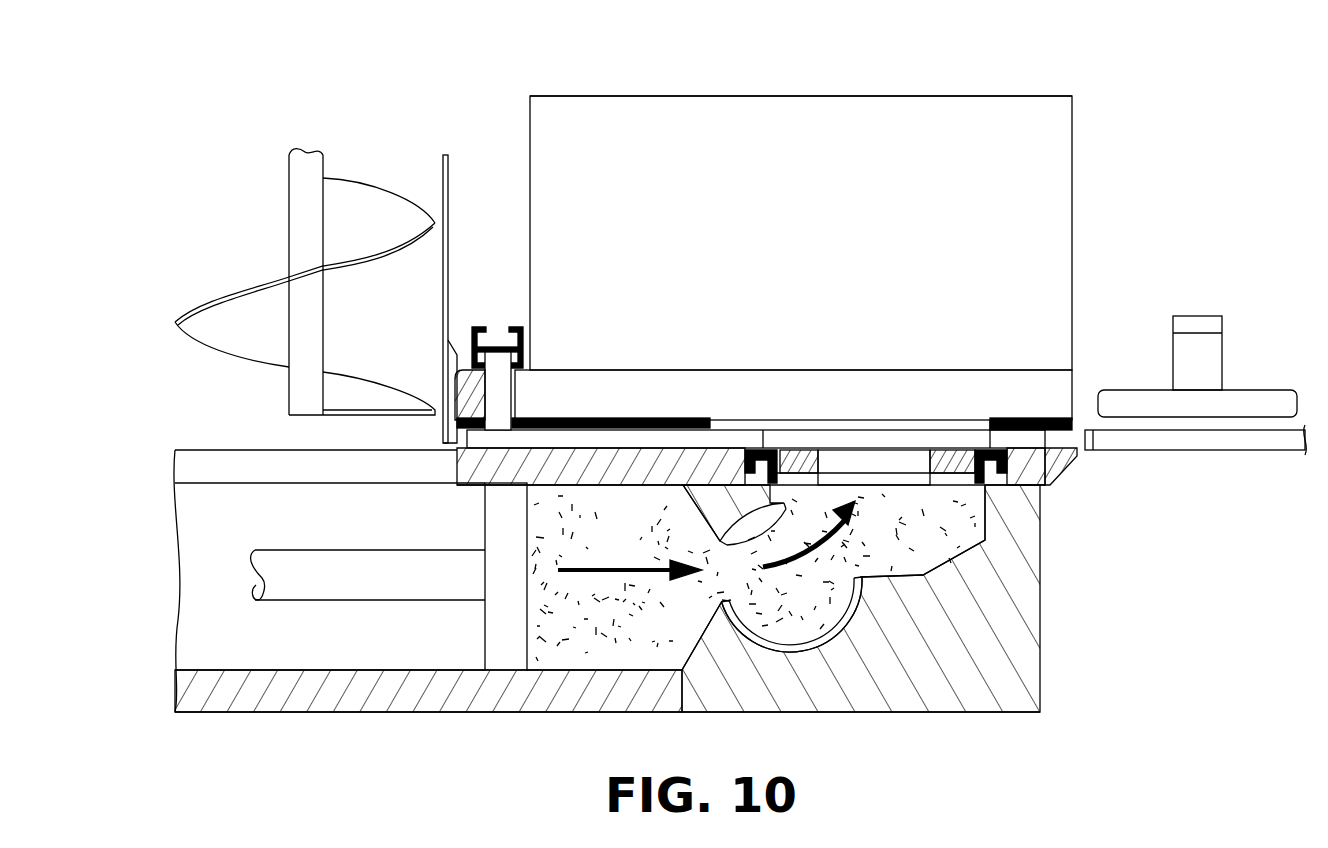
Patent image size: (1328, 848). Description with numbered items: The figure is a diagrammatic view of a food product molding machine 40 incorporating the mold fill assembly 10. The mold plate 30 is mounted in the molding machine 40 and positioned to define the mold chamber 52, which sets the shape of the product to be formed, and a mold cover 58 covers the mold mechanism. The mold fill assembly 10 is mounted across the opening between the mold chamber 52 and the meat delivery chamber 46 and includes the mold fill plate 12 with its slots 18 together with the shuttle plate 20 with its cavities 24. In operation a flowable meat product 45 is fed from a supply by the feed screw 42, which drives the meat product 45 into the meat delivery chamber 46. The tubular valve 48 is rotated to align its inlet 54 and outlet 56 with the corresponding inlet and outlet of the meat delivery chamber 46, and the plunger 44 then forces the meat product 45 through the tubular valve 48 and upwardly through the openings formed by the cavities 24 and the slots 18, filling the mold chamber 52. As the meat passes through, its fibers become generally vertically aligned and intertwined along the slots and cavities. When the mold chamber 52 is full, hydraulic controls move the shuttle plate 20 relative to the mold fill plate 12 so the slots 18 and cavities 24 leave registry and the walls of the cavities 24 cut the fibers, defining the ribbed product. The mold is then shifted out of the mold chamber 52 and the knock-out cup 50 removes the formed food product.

The mold fill assembly 10 is at (945, 507).
The mold fill plate 12 is at (965, 455).
The slots 18 is at (884, 450).
The shuttle plate 20 is at (968, 475).
The cavities 24 is at (907, 477).
The mold plate 30 is at (812, 422).
The molding machine 40 is at (910, 72).
The feed screw 42 is at (360, 200).
The plunger 44 is at (503, 618).
The meat product 45 is at (630, 546).
The meat delivery chamber 46 is at (580, 655).
The tubular valve 48 is at (778, 645).
The knock-out cup 50 is at (1208, 316).
The mold chamber 52 is at (918, 442).
The inlet 54 is at (712, 597).
The outlet 56 is at (850, 560).
The mold cover 58 is at (599, 96).